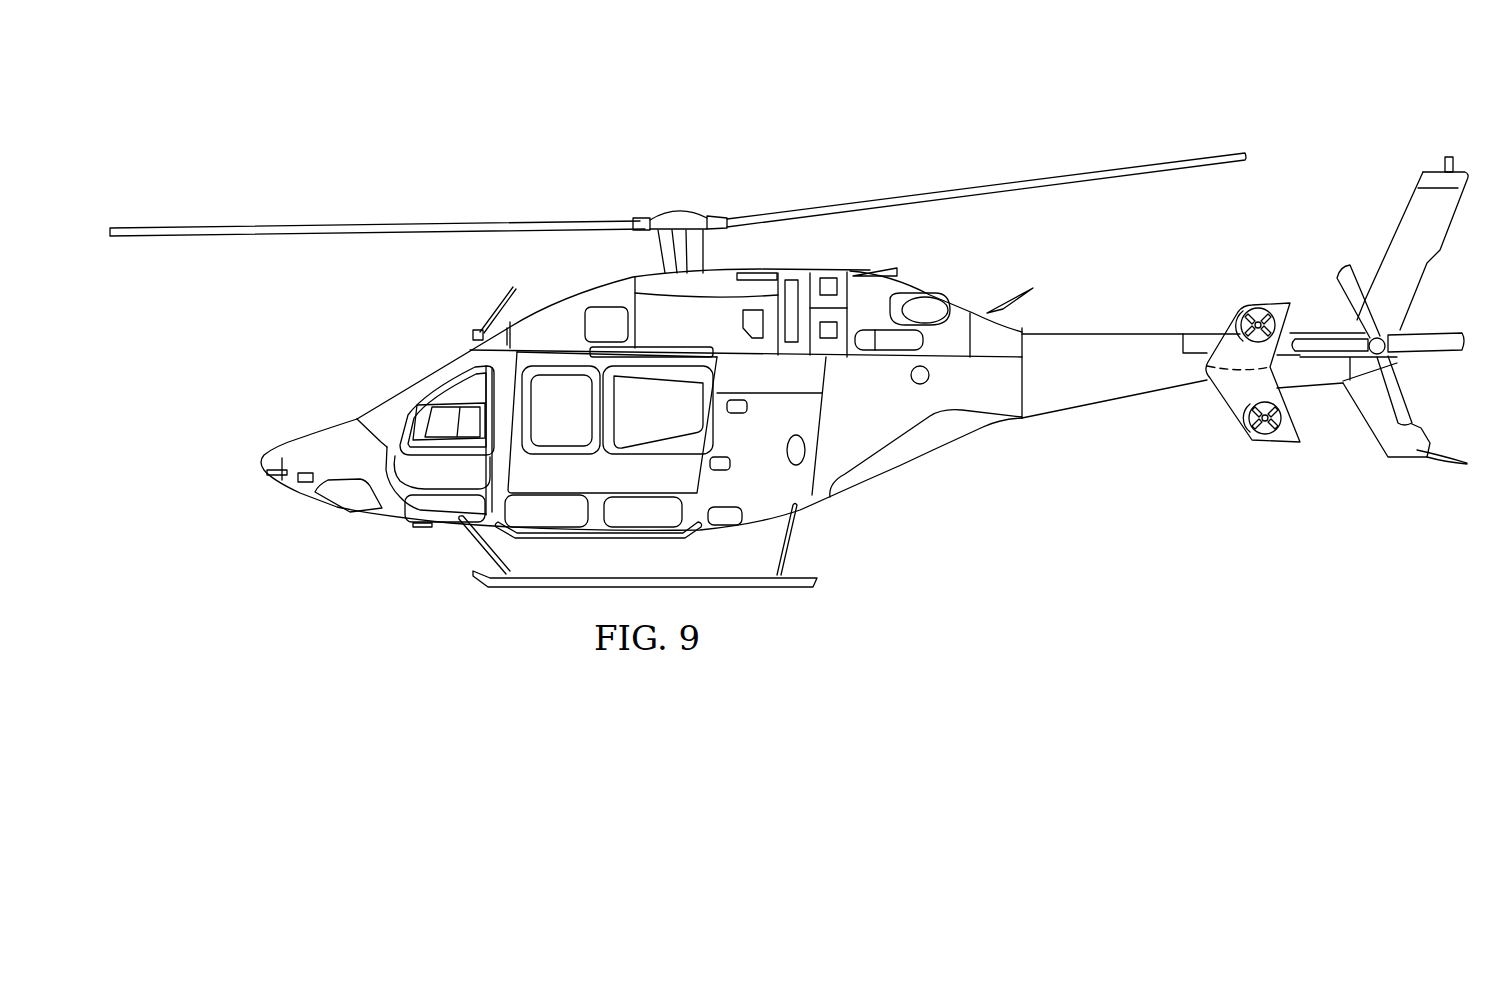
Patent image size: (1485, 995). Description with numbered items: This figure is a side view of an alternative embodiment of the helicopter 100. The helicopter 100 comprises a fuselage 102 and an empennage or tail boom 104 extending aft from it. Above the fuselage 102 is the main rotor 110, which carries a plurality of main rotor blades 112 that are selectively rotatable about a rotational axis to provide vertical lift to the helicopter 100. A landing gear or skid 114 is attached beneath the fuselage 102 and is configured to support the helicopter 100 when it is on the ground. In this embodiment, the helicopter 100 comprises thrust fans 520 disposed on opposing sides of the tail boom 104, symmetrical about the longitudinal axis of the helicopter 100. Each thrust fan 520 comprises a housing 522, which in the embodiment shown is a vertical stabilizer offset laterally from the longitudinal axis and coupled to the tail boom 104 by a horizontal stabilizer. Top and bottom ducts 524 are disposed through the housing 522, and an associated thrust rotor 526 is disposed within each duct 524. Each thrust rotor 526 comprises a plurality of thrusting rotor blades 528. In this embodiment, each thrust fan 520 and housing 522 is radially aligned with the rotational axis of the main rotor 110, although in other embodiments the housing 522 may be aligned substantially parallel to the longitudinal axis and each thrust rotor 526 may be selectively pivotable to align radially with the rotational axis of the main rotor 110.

The helicopter 100 is at (148, 127).
The fuselage 102 is at (298, 441).
The tail boom 104 is at (1100, 334).
The main rotor 110 is at (666, 204).
The main rotor blades 112 is at (372, 222).
The skid 114 is at (794, 540).
The thrust fan 520 is at (1236, 302).
The housing 522 is at (1238, 321).
The duct 524 is at (1271, 320).
The thrust rotor 526 is at (1258, 303).
The thrusting rotor blades 528 is at (1238, 330).